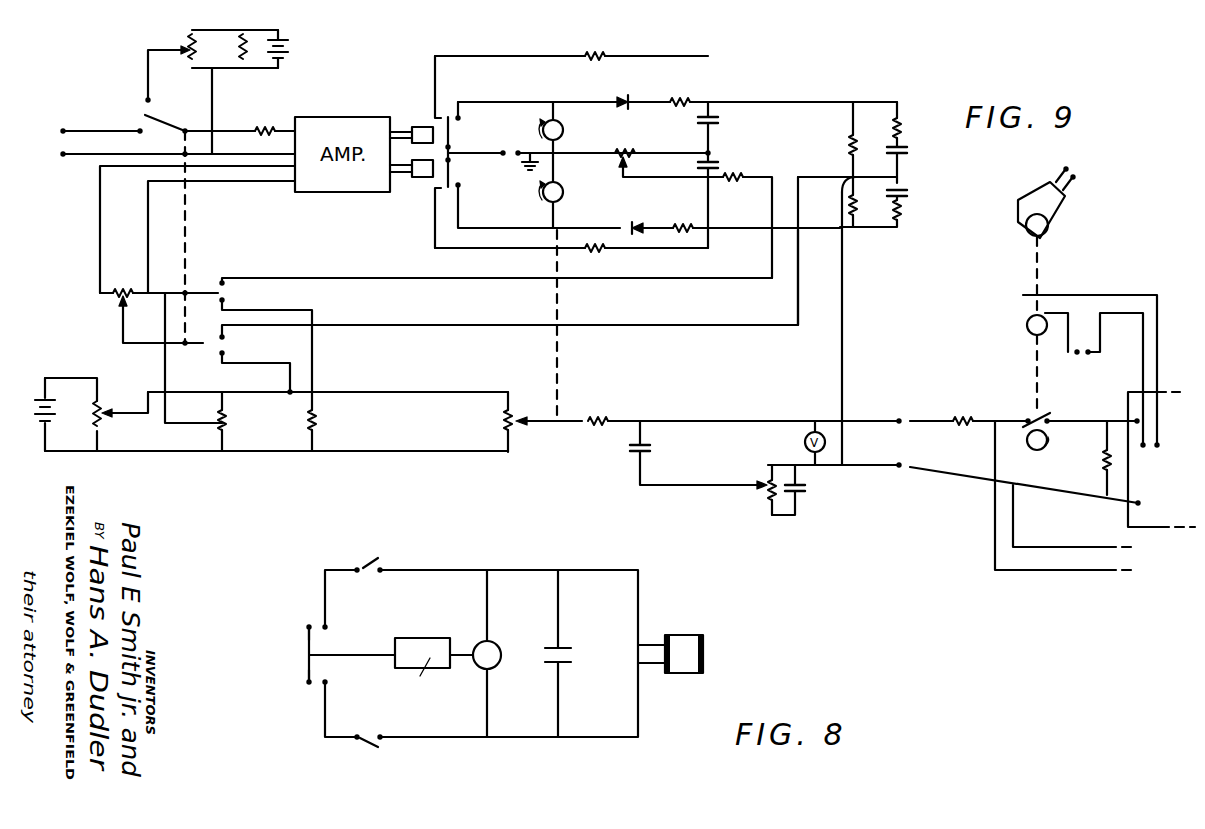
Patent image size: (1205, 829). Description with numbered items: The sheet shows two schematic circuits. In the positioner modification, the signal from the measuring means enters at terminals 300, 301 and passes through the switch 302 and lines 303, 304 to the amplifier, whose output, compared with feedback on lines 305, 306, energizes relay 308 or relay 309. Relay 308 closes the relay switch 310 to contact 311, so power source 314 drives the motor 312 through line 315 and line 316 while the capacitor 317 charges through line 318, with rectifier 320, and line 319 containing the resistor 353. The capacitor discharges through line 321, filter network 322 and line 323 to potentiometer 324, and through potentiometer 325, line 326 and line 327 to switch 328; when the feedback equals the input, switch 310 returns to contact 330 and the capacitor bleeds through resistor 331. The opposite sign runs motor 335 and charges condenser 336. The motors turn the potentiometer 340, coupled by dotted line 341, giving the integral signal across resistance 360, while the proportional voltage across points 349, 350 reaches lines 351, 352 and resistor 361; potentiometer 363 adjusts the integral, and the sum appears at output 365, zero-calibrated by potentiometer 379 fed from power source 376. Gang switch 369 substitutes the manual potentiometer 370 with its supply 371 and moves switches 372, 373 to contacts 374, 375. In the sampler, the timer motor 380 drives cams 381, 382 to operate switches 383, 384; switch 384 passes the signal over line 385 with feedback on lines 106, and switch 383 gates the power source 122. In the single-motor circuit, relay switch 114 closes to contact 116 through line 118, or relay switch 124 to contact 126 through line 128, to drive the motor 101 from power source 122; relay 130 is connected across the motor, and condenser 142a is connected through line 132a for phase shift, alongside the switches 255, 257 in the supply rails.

In FIG. 9, the terminal 300 is at (68, 120).
In FIG. 9, the terminal 301 is at (66, 158).
In FIG. 9, the switch 302 is at (172, 115).
In FIG. 9, the line 303 is at (231, 129).
In FIG. 9, the line 304 is at (235, 152).
In FIG. 9, the line 305 is at (245, 169).
In FIG. 9, the line 306 is at (267, 182).
In FIG. 9, the relay 308 is at (421, 128).
In FIG. 9, the relay 309 is at (421, 178).
In FIG. 9, the relay switch 310 is at (454, 131).
In FIG. 9, the contact 311 is at (464, 118).
In FIG. 9, the motor 312 is at (563, 126).
In FIG. 9, the power source 314 is at (510, 160).
In FIG. 9, the line 315 is at (504, 158).
In FIG. 9, the line 316 is at (527, 100).
In FIG. 9, the capacitor 317 is at (720, 120).
In FIG. 9, the line 318 is at (652, 101).
In FIG. 9, the line 319 is at (655, 149).
In FIG. 9, the rectifier 320 is at (614, 98).
In FIG. 9, the line 321 is at (791, 100).
In FIG. 9, the filter network 322 is at (866, 118).
In FIG. 9, the line 323 is at (800, 263).
In FIG. 9, the potentiometer 324 is at (107, 299).
In FIG. 9, the potentiometer 325 is at (638, 158).
In FIG. 9, the line 326 is at (650, 183).
In FIG. 9, the line 327 is at (587, 279).
In FIG. 9, the switch 328 is at (191, 285).
In FIG. 9, the relay contact 330 is at (441, 113).
In FIG. 9, the resistor 331 is at (589, 49).
In FIG. 9, the motor 335 is at (563, 198).
In FIG. 9, the condenser 336 is at (720, 166).
In FIG. 9, the potentiometer 340 is at (536, 427).
In FIG. 9, the dotted line 341 is at (560, 373).
In FIG. 9, the point 349 is at (765, 172).
In FIG. 9, the point 350 is at (800, 168).
In FIG. 9, the line 351 is at (164, 376).
In FIG. 9, the line 352 is at (843, 333).
In FIG. 9, the resistor 353 is at (618, 148).
In FIG. 9, the resistance 360 is at (500, 421).
In FIG. 9, the resistor 361 is at (232, 422).
In FIG. 9, the potentiometer 363 is at (109, 409).
In FIG. 9, the output 365 is at (910, 434).
In FIG. 9, the gang switch 369 is at (191, 216).
In FIG. 9, the input potentiometer 370 is at (170, 35).
In FIG. 9, the power supply 371 is at (285, 33).
In FIG. 9, the switch 372 is at (206, 299).
In FIG. 9, the switch 373 is at (203, 343).
In FIG. 9, the contact 374 is at (228, 301).
In FIG. 9, the contact 375 is at (228, 354).
In FIG. 9, the power source 376 is at (805, 490).
In FIG. 9, the potentiometer 379 is at (763, 488).
In FIG. 9, the timer motor 380 is at (1018, 225).
In FIG. 9, the cam 381 is at (1025, 324).
In FIG. 9, the cam 382 is at (1040, 451).
In FIG. 9, the switch 383 is at (1022, 294).
In FIG. 9, the switch 384 is at (1042, 412).
In FIG. 9, the line 385 is at (1012, 416).
In FIG. 9, the lines 106 is at (1046, 546).
In FIG. 9, the power source 122 is at (1145, 450).
In FIG. 8, the power source 122 is at (427, 637).
In FIG. 8, the motor 101 is at (500, 645).
In FIG. 8, the relay switch 114 is at (335, 626).
In FIG. 8, the relay contact 116 is at (307, 625).
In FIG. 8, the line 118 is at (430, 570).
In FIG. 8, the relay switch 124 is at (333, 682).
In FIG. 8, the contact 126 is at (307, 684).
In FIG. 8, the line 128 is at (420, 738).
In FIG. 8, the relay 130 is at (680, 655).
In FIG. 8, the line 132a is at (518, 570).
In FIG. 8, the condenser 142a is at (565, 645).
In FIG. 8, the switch 255 is at (366, 560).
In FIG. 8, the switch 257 is at (362, 748).